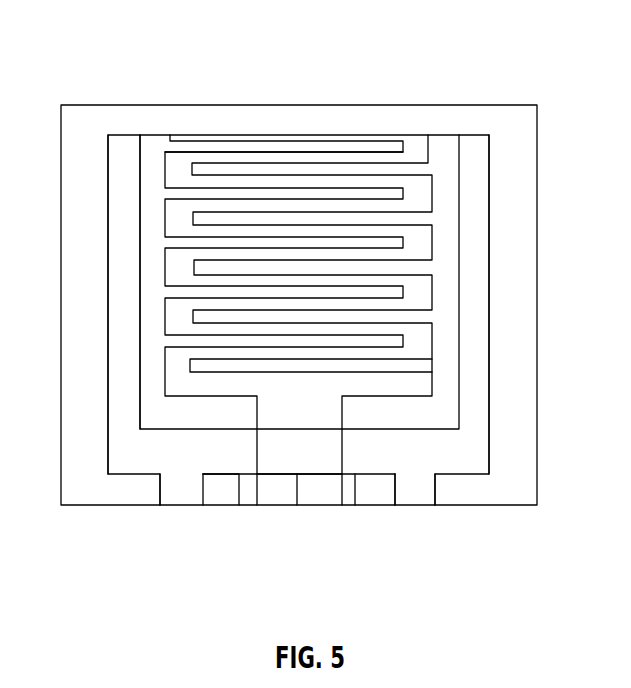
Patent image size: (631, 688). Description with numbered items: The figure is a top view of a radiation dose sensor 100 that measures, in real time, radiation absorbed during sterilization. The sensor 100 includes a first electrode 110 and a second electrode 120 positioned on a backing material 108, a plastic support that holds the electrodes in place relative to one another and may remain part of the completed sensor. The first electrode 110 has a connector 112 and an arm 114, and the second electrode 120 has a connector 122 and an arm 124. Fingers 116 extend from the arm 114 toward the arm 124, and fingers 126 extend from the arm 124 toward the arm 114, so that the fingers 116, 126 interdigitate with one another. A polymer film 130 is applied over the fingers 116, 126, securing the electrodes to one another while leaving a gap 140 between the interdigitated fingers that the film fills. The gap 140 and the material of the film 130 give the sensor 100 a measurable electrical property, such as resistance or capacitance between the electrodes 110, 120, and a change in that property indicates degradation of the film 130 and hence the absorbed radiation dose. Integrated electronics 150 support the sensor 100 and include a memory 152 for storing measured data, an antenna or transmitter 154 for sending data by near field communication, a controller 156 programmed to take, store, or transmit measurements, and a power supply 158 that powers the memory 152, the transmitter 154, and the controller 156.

The radiation dose sensor 100 is at (542, 104).
The backing material 108 is at (318, 320).
The first electrode 110 is at (108, 368).
The connector 112 is at (187, 487).
The arm 114 is at (122, 250).
The fingers 116 is at (293, 193).
The second electrode 120 is at (493, 387).
The connector 122 is at (411, 479).
The arm 124 is at (303, 282).
The fingers 126 is at (387, 173).
The polymer film 130 is at (298, 269).
The gap 140 is at (334, 152).
The integrated electronics 150 is at (301, 538).
The memory 152 is at (277, 497).
The antenna or transmitter 154 is at (325, 493).
The controller 156 is at (222, 497).
The power supply 158 is at (370, 497).